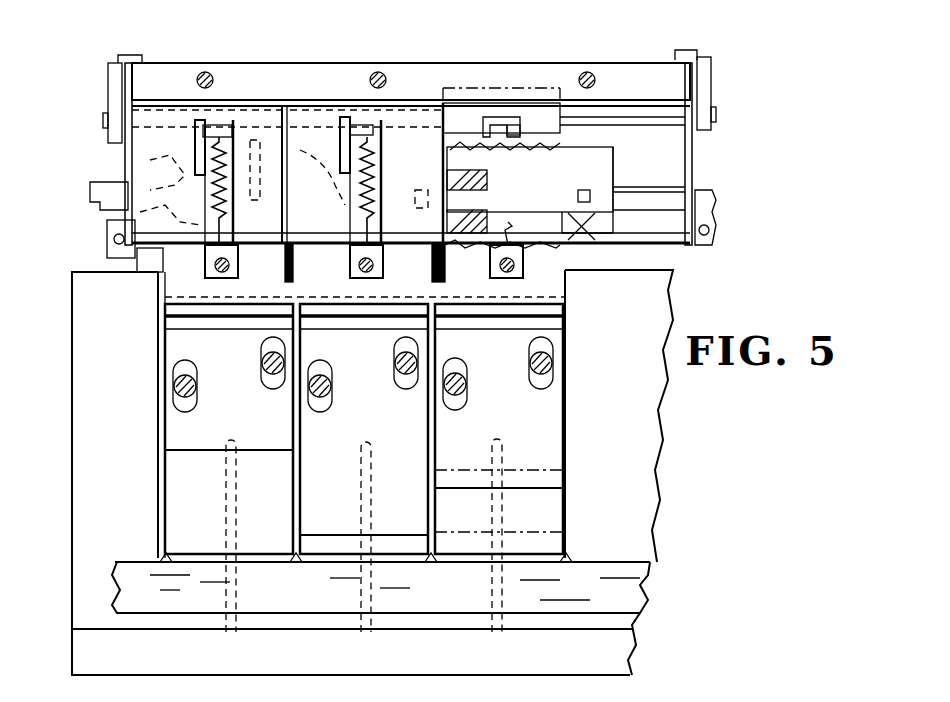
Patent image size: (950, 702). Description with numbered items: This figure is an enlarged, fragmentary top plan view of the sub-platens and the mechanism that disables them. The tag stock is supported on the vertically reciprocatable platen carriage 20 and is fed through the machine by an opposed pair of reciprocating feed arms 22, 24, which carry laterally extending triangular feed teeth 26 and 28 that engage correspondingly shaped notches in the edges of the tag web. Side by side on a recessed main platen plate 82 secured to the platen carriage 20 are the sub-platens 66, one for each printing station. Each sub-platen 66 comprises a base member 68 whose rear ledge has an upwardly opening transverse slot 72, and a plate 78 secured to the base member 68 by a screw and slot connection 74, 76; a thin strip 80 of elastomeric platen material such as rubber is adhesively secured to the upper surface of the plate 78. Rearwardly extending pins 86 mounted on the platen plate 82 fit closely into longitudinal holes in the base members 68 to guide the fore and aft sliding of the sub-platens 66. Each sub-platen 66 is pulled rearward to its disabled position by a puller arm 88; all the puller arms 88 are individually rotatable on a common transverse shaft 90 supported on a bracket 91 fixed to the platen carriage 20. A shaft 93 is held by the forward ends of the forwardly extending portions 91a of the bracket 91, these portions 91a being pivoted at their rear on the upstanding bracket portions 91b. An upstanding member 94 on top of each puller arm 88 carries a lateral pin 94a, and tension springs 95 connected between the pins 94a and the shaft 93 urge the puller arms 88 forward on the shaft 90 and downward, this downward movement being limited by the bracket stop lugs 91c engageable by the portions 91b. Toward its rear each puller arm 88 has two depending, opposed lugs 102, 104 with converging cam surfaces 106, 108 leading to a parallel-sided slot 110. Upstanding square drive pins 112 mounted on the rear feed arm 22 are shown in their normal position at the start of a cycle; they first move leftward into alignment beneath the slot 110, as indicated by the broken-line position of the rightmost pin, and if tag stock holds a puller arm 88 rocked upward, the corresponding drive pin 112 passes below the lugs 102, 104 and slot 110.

The platen carriage 20 is at (655, 418).
The rear tag feed arm 22 is at (716, 196).
The feed arm 24 is at (640, 598).
The feed tooth 26 is at (592, 238).
The feed tooth 28 is at (568, 558).
The sub-platen 66 is at (188, 489).
The base member 68 is at (273, 565).
The transverse slot 72 is at (566, 297).
The screw 74 is at (262, 355).
The slot 76 is at (272, 392).
The plate 78 is at (183, 541).
The strip 80 is at (208, 391).
The main platen plate 82 is at (108, 456).
The pins 86 is at (230, 556).
The puller arm 88 is at (140, 150).
The transverse shaft 90 is at (668, 120).
The bracket 91 is at (596, 58).
The forwardly extending portions 91a is at (128, 165).
The upstanding bracket portions 91b is at (108, 72).
The bracket stop lugs 91c is at (125, 54).
The shaft 93 is at (137, 240).
The upstanding member 94 is at (200, 135).
The lateral pin 94a is at (228, 128).
The tension spring 95 is at (236, 150).
The depending lug 102 is at (468, 160).
The depending lug 104 is at (537, 205).
The cam surface 106 is at (556, 165).
The cam surface 108 is at (541, 185).
The slot 110 is at (106, 222).
The drive pin 112 is at (622, 180).